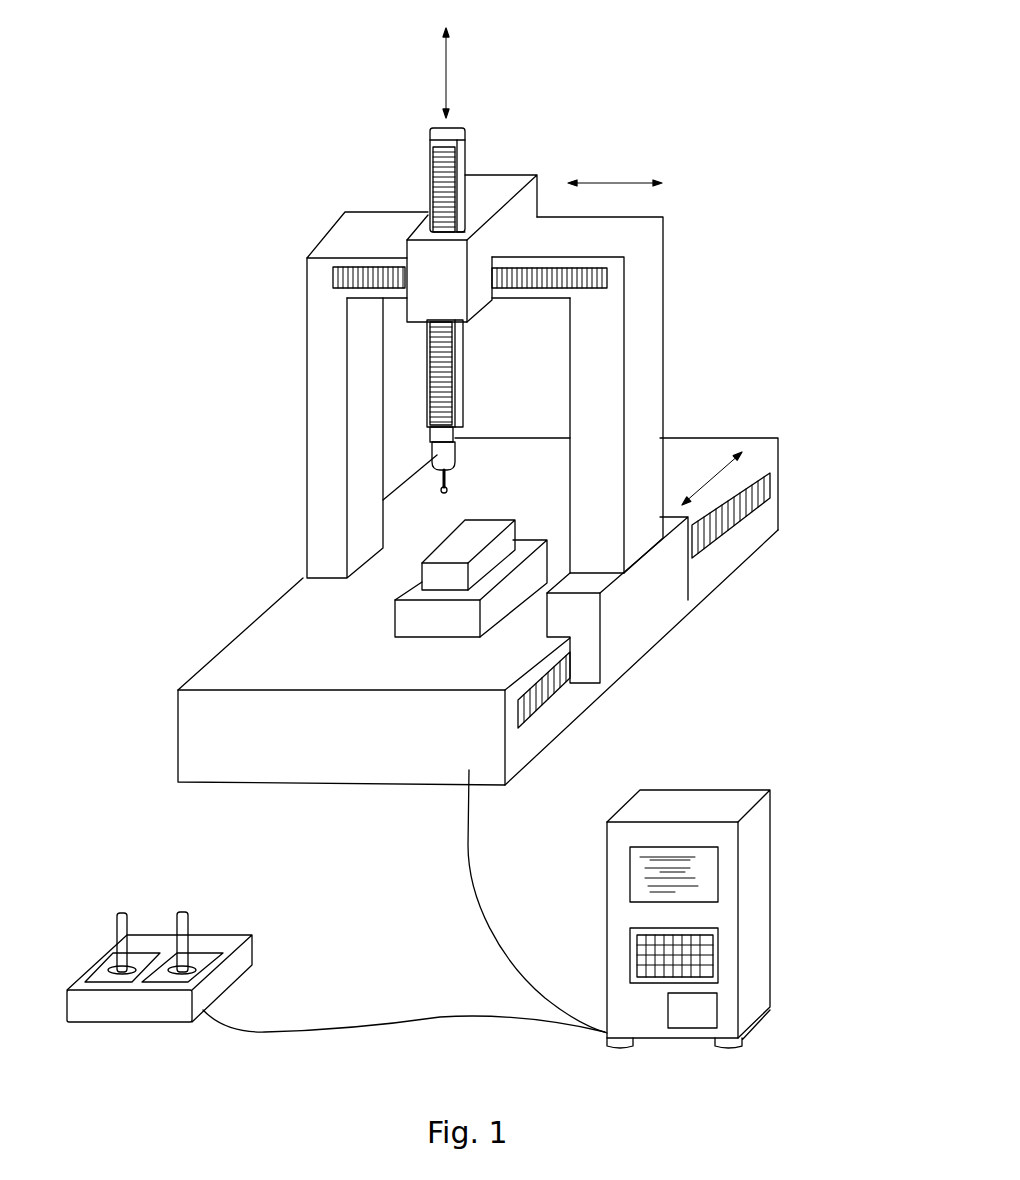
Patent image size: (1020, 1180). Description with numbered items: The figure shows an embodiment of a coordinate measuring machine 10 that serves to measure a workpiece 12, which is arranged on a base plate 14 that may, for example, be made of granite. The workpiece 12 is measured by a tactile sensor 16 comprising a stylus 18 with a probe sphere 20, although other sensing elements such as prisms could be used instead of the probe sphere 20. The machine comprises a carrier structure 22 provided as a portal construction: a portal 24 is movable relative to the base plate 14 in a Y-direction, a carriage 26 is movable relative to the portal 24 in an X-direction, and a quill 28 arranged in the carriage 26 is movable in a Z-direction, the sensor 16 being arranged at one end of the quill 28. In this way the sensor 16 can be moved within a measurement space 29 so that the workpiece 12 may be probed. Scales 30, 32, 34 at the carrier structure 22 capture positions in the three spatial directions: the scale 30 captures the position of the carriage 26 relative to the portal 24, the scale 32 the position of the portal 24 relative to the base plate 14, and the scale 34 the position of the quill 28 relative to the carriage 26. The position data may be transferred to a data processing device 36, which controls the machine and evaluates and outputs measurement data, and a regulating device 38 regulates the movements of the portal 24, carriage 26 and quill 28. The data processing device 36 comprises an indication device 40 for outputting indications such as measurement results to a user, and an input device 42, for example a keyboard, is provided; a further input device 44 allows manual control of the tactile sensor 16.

The coordinate measuring machine 10 is at (690, 187).
The workpiece 12 is at (468, 543).
The base plate 14 is at (243, 672).
The tactile sensor 16 is at (464, 460).
The stylus 18 is at (433, 453).
The probe sphere 20 is at (448, 489).
The carrier structure 22 is at (310, 233).
The portal 24 is at (327, 358).
The carriage 26 is at (404, 236).
The quill 28 is at (440, 128).
The measurement space 29 is at (328, 643).
The scale 30 is at (608, 277).
The scale 32 is at (737, 528).
The scale 34 is at (465, 168).
The data processing device 36 is at (683, 805).
The regulating device 38 is at (717, 1012).
The indication device 40 is at (717, 870).
The input device 42 is at (718, 947).
The further input device 44 is at (232, 930).